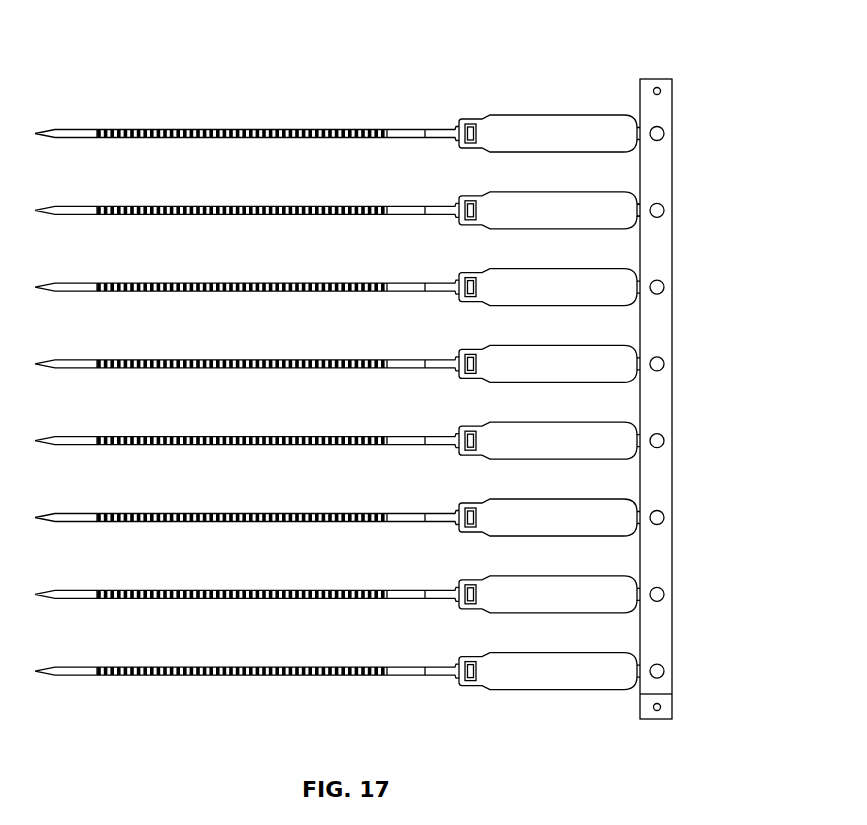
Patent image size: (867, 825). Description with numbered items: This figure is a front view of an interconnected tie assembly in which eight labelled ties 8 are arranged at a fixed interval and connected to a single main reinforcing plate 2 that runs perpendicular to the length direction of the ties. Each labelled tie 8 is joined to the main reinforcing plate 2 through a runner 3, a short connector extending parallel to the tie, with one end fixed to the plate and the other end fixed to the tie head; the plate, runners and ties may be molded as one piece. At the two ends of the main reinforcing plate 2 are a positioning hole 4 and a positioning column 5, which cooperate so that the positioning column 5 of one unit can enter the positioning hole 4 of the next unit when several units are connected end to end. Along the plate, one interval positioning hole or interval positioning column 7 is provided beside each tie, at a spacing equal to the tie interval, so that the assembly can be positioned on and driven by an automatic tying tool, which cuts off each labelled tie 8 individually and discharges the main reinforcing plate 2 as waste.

The main reinforcing plate 2 is at (663, 105).
The runner 3 is at (638, 213).
The positioning hole 4 is at (653, 90).
The positioning column 5 is at (660, 704).
The interval positioning hole or interval positioning column 7 is at (661, 283).
The labelled tie 8 is at (408, 132).